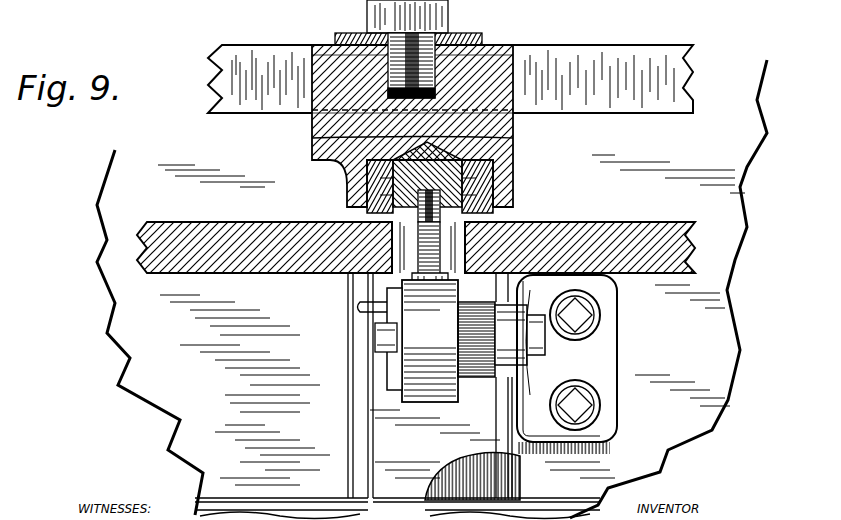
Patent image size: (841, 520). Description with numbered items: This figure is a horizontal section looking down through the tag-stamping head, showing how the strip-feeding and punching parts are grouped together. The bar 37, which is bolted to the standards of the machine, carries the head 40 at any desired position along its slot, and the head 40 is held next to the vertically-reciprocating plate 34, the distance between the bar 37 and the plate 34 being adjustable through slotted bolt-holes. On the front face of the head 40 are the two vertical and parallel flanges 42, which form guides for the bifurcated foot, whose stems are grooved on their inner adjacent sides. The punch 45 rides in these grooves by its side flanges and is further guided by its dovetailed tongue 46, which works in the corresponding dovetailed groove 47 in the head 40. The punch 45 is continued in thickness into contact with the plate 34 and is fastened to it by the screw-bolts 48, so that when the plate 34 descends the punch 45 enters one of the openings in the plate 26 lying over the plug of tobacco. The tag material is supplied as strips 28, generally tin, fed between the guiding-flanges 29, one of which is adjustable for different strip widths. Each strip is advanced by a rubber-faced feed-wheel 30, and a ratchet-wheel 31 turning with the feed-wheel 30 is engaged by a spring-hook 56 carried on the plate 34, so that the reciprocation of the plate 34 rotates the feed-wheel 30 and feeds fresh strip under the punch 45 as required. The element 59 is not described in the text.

The plate 26 is at (738, 290).
The sheets or strips 28 is at (513, 387).
The guiding-flanges 29 is at (348, 428).
The feed-wheels 30 is at (473, 341).
The ratchet-wheel 31 is at (395, 366).
The plate 34 is at (665, 232).
The bar 37 is at (258, 60).
The head 40 is at (513, 128).
The vertical and parallel flanges 42 is at (350, 205).
The punch 45 is at (367, 185).
The dovetailed tongue 46 is at (505, 152).
The dovetailed groove 47 is at (312, 138).
The screw-bolts 48 is at (412, 277).
The spring-hooks 56 is at (360, 307).
The bolt 59 is at (450, 14).